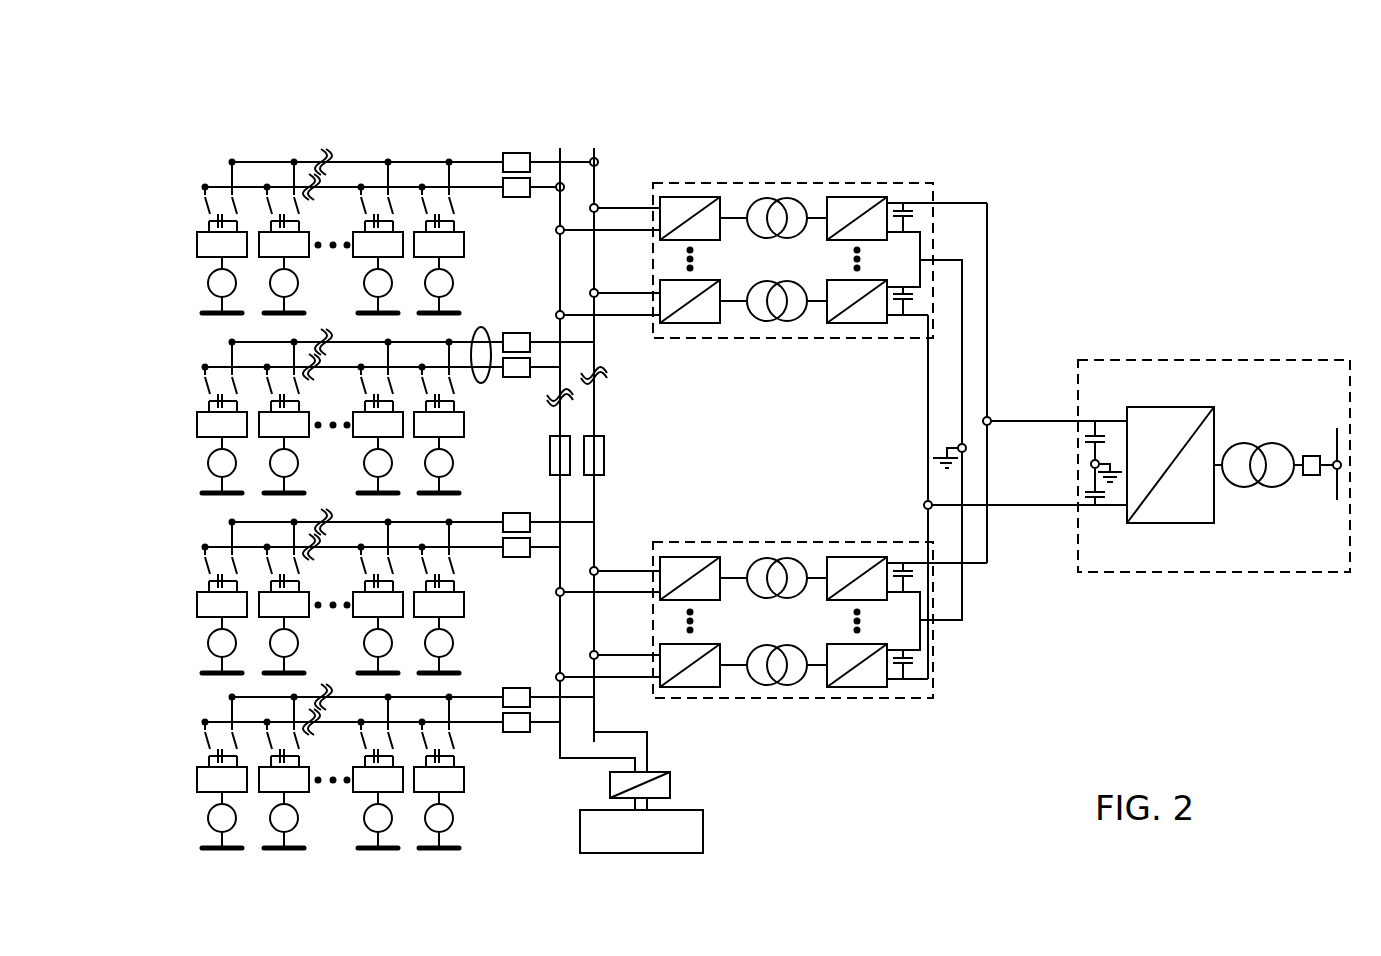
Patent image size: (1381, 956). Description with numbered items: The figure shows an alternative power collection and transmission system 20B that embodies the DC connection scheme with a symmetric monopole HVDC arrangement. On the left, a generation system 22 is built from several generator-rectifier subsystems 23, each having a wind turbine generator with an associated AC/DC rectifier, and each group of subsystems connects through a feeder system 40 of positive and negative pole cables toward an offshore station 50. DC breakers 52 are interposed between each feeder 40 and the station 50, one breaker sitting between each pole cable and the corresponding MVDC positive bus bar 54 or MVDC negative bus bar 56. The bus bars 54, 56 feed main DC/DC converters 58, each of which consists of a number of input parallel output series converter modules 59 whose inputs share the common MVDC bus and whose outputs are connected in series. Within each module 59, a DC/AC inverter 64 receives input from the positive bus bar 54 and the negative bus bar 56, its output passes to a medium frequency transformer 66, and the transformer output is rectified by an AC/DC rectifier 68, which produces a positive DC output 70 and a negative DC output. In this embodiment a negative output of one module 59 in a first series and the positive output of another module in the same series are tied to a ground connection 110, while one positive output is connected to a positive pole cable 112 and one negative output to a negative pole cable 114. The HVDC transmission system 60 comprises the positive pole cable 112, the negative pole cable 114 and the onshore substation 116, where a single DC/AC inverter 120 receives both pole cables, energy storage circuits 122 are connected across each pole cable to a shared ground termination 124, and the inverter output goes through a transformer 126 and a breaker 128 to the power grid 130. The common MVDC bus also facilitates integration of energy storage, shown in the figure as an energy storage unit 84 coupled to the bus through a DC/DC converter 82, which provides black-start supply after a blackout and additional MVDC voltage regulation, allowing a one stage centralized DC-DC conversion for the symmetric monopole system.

The power collection and transmission system 20B is at (770, 471).
The generation system 22 is at (429, 469).
The generator-rectifier subsystem 23 is at (392, 425).
The feeder system 40 is at (499, 332).
The offshore station 50 is at (767, 471).
The DC breaker 52 is at (585, 442).
The MVDC positive bus bar 54 is at (625, 460).
The MVDC negative bus bar 56 is at (564, 460).
The main DC/DC converter 58 is at (847, 423).
The converter module 59 is at (773, 441).
The DC/AC inverter 64 is at (691, 442).
The medium frequency transformer 66 is at (837, 442).
The AC/DC rectifier 68 is at (894, 441).
The positive DC output 70 is at (937, 423).
The HVDC transmission system 60 is at (1048, 384).
The ground connection 110 is at (912, 440).
The positive pole cable 112 is at (1036, 357).
The negative pole cable 114 is at (988, 497).
The onshore substation 116 is at (1191, 422).
The DC/AC inverter 120 is at (1170, 449).
The energy storage circuit 122 is at (1102, 494).
The ground termination 124 is at (1077, 463).
The transformer 126 is at (1258, 446).
The breaker 128 is at (1315, 491).
The power grid 130 is at (1324, 434).
The DC/DC converter 82 is at (663, 783).
The energy storage 84 is at (680, 824).